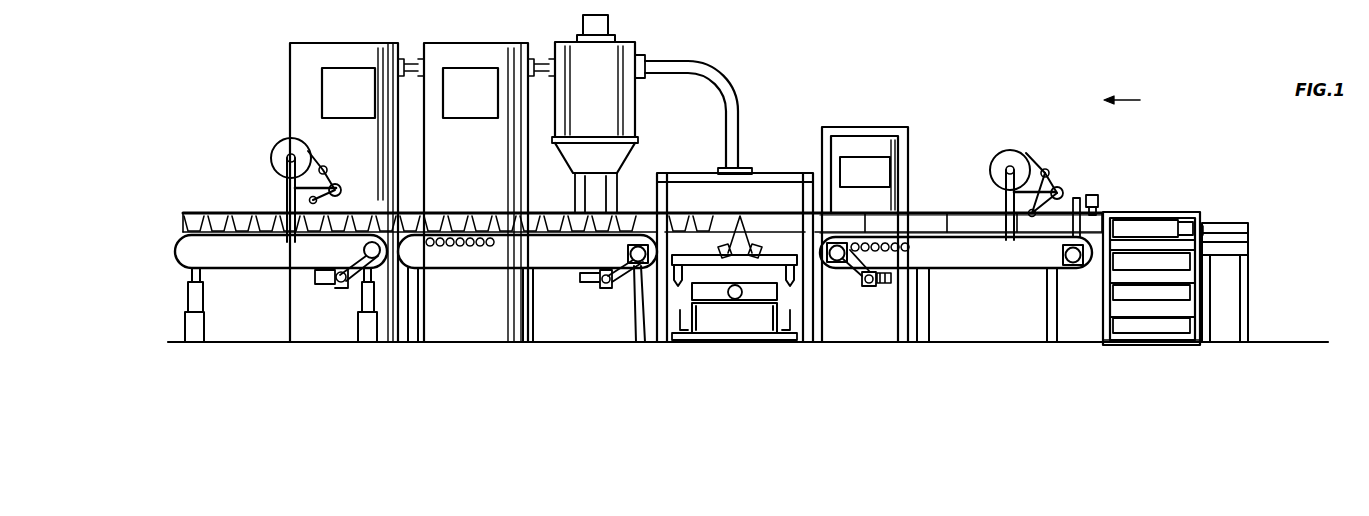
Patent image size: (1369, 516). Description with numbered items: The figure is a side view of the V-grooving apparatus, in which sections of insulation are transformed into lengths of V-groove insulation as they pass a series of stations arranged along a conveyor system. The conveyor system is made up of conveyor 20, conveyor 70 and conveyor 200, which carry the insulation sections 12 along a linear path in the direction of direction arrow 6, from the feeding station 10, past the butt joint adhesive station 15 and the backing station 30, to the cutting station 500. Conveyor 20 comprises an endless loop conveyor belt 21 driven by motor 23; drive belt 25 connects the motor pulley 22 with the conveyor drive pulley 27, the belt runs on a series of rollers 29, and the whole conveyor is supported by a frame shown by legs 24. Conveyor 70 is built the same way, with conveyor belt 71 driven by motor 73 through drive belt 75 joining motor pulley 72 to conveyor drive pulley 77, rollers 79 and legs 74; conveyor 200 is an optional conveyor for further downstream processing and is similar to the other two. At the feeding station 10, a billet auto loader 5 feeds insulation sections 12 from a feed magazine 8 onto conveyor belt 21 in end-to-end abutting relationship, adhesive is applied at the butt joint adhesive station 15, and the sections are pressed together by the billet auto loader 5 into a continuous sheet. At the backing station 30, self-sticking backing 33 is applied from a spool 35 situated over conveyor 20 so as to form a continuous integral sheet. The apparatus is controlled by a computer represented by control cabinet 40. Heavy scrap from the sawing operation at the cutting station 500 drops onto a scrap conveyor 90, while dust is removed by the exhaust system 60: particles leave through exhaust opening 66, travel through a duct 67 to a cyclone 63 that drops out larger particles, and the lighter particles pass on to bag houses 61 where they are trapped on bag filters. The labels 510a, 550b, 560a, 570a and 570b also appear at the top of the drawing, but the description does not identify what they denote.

The billet auto loader 5 is at (1240, 222).
The direction arrow 6 is at (1140, 100).
The feed magazine 8 is at (1150, 350).
The feeding station 10 is at (1169, 197).
The insulation section 12 is at (980, 214).
The butt joint adhesive station 15 is at (1096, 196).
The conveyor 20 is at (990, 352).
The conveyor belt 21 is at (977, 240).
The motor pulley 22 is at (883, 281).
The motor 23 is at (871, 290).
The legs 24 is at (830, 342).
The drive belt 25 is at (855, 274).
The conveyor drive pulley 27 is at (840, 243).
The rollers 29 is at (904, 249).
The backing station 30 is at (1014, 138).
The backing 33 is at (1056, 182).
The spool 35 is at (1020, 160).
The control cabinet 40 is at (852, 118).
The exhaust system 60 is at (262, 26).
The bag houses 61 is at (298, 55).
The cyclone 63 is at (598, 114).
The exhaust opening 66 is at (765, 297).
The duct 67 is at (722, 96).
The conveyor 70 is at (589, 350).
The conveyor belt 71 is at (532, 236).
The motor pulley 72 is at (633, 263).
The motor 73 is at (604, 285).
The legs 74 is at (412, 347).
The drive belt 75 is at (628, 252).
The conveyor drive pulley 77 is at (640, 348).
The rollers 79 is at (468, 242).
The scrap conveyor 90 is at (740, 322).
The conveyor 200 is at (288, 351).
The cutting station 500 is at (706, 350).
The station 510a is at (822, 0).
The station 550b is at (740, 6).
The station 560a is at (622, 6).
The station 570a is at (777, 0).
The station 570b is at (694, 0).